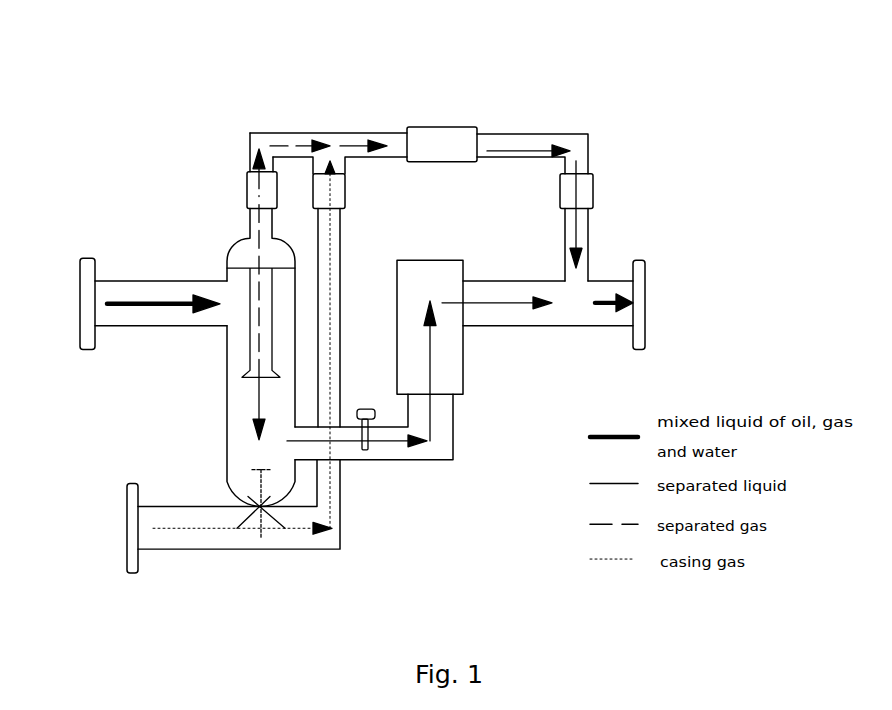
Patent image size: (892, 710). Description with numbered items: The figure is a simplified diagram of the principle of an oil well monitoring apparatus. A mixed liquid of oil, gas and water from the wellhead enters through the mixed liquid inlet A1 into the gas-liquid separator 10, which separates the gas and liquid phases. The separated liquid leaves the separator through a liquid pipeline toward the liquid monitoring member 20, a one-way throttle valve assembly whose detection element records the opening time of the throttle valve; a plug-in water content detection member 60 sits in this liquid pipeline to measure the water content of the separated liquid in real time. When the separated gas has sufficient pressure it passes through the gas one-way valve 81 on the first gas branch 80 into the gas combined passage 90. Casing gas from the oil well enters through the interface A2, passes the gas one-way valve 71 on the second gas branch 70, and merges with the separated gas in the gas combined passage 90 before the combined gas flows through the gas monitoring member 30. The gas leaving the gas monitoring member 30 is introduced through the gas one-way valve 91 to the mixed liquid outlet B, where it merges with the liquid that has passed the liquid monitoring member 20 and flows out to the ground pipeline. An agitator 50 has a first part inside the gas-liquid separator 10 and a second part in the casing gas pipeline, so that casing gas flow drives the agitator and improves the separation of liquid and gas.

The gas-liquid separator 10 is at (242, 287).
The liquid monitoring member 20 is at (437, 347).
The gas monitoring member 30 is at (432, 147).
The agitator 50 is at (262, 520).
The water content detection member 60 is at (375, 418).
The second gas branch 70 is at (323, 263).
The gas one-way valve 71 is at (330, 175).
The first gas branch 80 is at (255, 225).
The gas one-way valve 81 is at (258, 188).
The gas combined passage 90 is at (358, 153).
The gas one-way valve 91 is at (577, 185).
The mixed liquid inlet A1 is at (87, 287).
The interface A2 is at (132, 507).
The mixed liquid outlet B is at (640, 293).